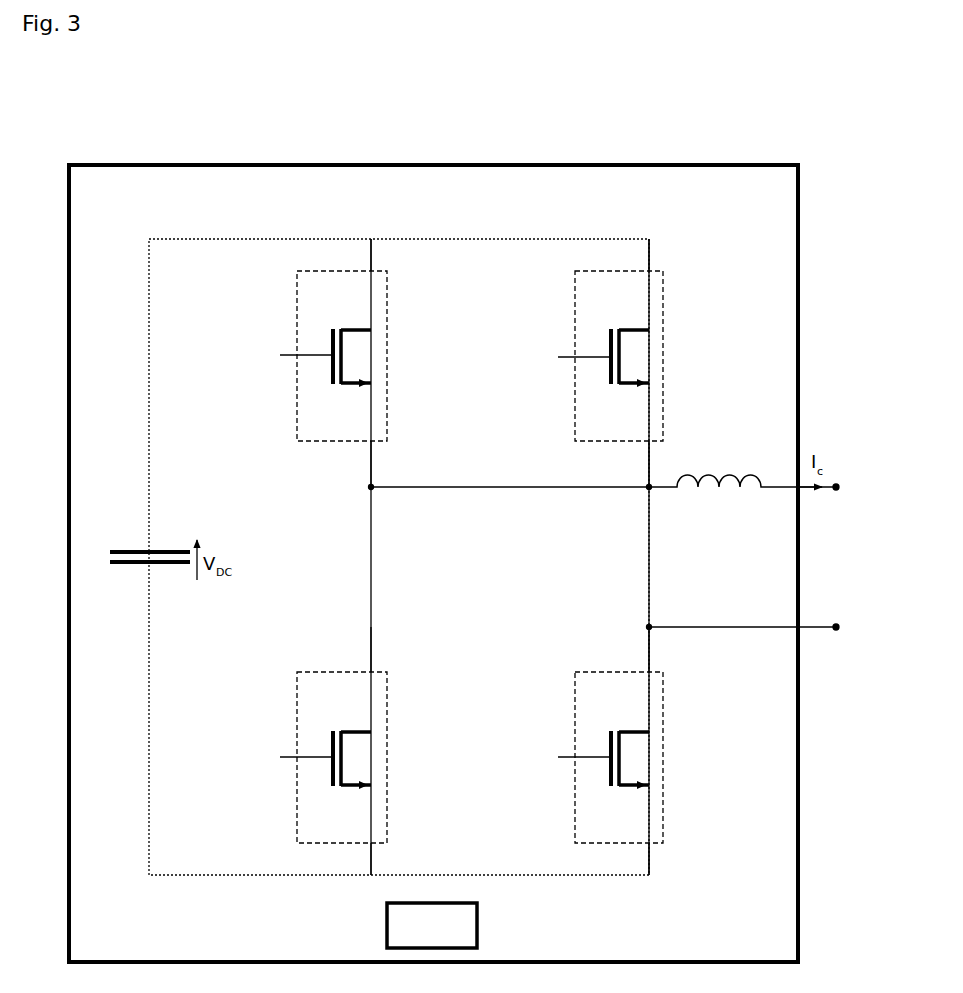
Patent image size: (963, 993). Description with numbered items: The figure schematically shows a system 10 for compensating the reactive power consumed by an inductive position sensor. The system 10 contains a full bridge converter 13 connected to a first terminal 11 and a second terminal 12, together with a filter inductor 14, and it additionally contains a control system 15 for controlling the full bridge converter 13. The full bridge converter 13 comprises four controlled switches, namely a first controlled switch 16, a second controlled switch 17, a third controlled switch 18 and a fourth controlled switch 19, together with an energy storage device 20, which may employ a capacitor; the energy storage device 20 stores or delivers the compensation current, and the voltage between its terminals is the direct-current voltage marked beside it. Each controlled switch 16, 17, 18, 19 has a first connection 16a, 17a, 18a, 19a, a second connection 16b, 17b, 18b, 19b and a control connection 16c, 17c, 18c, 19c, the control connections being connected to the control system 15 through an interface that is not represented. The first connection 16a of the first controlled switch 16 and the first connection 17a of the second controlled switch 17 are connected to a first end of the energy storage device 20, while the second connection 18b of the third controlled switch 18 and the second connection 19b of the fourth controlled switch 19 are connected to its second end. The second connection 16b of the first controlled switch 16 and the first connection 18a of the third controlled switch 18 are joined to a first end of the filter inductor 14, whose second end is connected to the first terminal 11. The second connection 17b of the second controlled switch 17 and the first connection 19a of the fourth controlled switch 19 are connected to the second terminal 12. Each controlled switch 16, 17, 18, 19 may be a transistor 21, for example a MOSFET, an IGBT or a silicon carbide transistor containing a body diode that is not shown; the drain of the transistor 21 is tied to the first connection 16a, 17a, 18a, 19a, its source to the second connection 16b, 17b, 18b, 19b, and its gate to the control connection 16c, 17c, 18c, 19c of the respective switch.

The system 10 is at (435, 161).
The first terminal 11 is at (839, 484).
The second terminal 12 is at (839, 633).
The full bridge converter 13 is at (393, 236).
The filter inductor 14 is at (722, 492).
The control system 15 is at (432, 925).
The first controlled switch 16 is at (295, 410).
The first connection of the first controlled switch 16a is at (373, 271).
The second connection of the first controlled switch 16b is at (373, 442).
The control connection of the first controlled switch 16c is at (296, 355).
The second controlled switch 17 is at (573, 410).
The first connection of the second controlled switch 17a is at (651, 271).
The second connection of the second controlled switch 17b is at (650, 442).
The control connection of the second controlled switch 17c is at (574, 357).
The third controlled switch 18 is at (295, 812).
The first connection of the third controlled switch 18a is at (373, 672).
The second connection of the third controlled switch 18b is at (373, 844).
The control connection of the third controlled switch 18c is at (296, 757).
The fourth controlled switch 19 is at (573, 812).
The first connection of the fourth controlled switch 19a is at (651, 672).
The second connection of the fourth controlled switch 19b is at (651, 844).
The control connection of the fourth controlled switch 19c is at (574, 757).
The energy storage device 20 is at (126, 546).
The transistor 21 is at (344, 327).